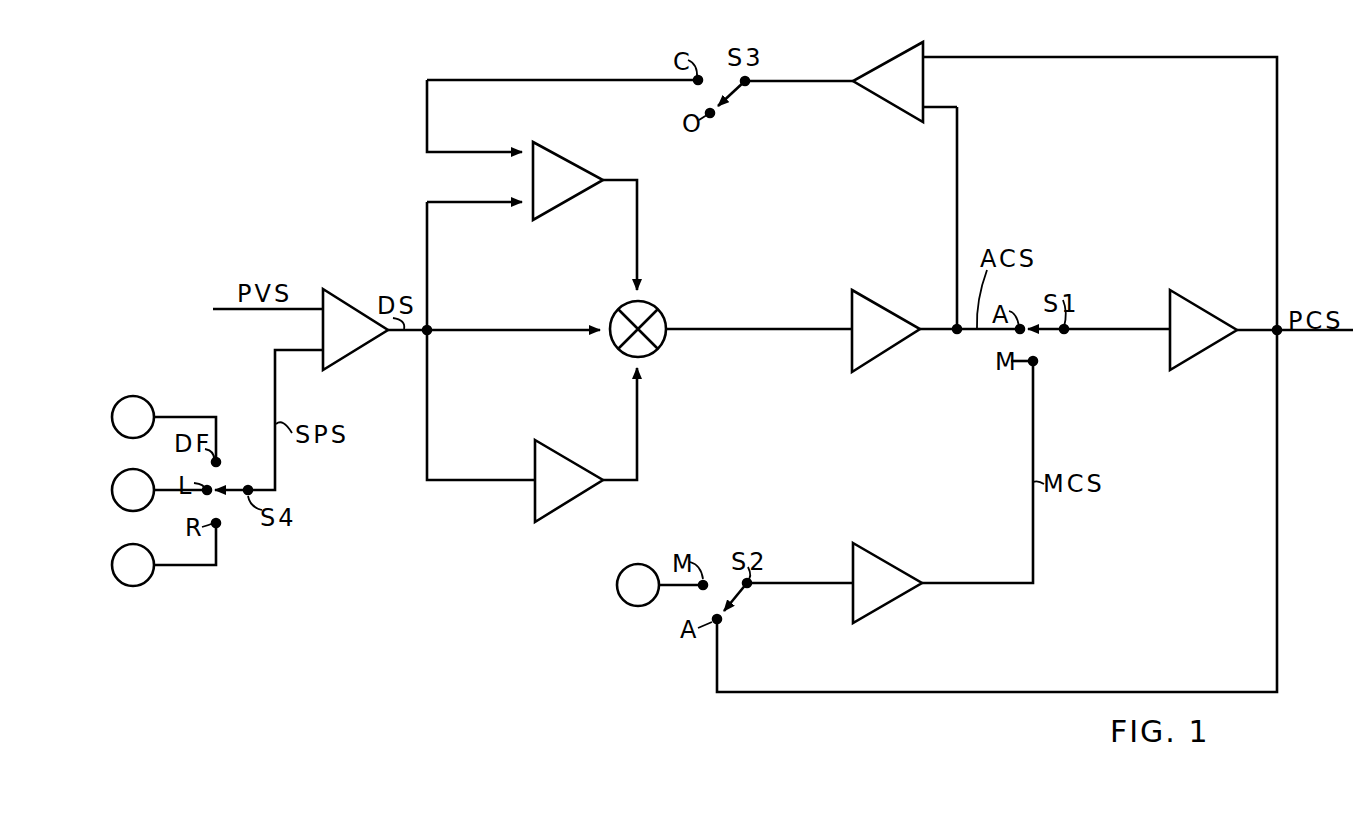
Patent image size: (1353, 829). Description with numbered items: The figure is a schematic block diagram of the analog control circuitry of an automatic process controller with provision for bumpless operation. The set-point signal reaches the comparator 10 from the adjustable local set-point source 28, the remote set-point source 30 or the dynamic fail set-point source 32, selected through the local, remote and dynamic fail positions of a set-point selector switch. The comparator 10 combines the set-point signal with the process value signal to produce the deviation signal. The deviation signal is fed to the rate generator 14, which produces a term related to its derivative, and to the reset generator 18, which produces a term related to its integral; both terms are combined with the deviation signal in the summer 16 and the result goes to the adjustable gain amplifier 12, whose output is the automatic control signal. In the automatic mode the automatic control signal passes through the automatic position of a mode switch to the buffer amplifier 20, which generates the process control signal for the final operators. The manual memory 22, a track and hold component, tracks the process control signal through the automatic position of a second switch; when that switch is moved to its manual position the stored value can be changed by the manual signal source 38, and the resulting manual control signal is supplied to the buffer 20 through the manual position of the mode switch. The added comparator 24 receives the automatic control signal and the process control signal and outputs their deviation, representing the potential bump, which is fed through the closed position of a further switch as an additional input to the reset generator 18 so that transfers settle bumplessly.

The comparator 10 is at (345, 358).
The gain amplifier 12 is at (888, 349).
The rate generator 14 is at (556, 512).
The summer 16 is at (657, 309).
The reset generator 18 is at (550, 215).
The buffer amplifier 20 is at (1205, 350).
The manual memory 22 is at (877, 556).
The comparator 24 is at (882, 63).
The adjustable local set-point source 28 is at (133, 490).
The remote set-point source 30 is at (133, 565).
The dynamic fail set-point source 32 is at (133, 417).
The manual signal source 38 is at (638, 585).